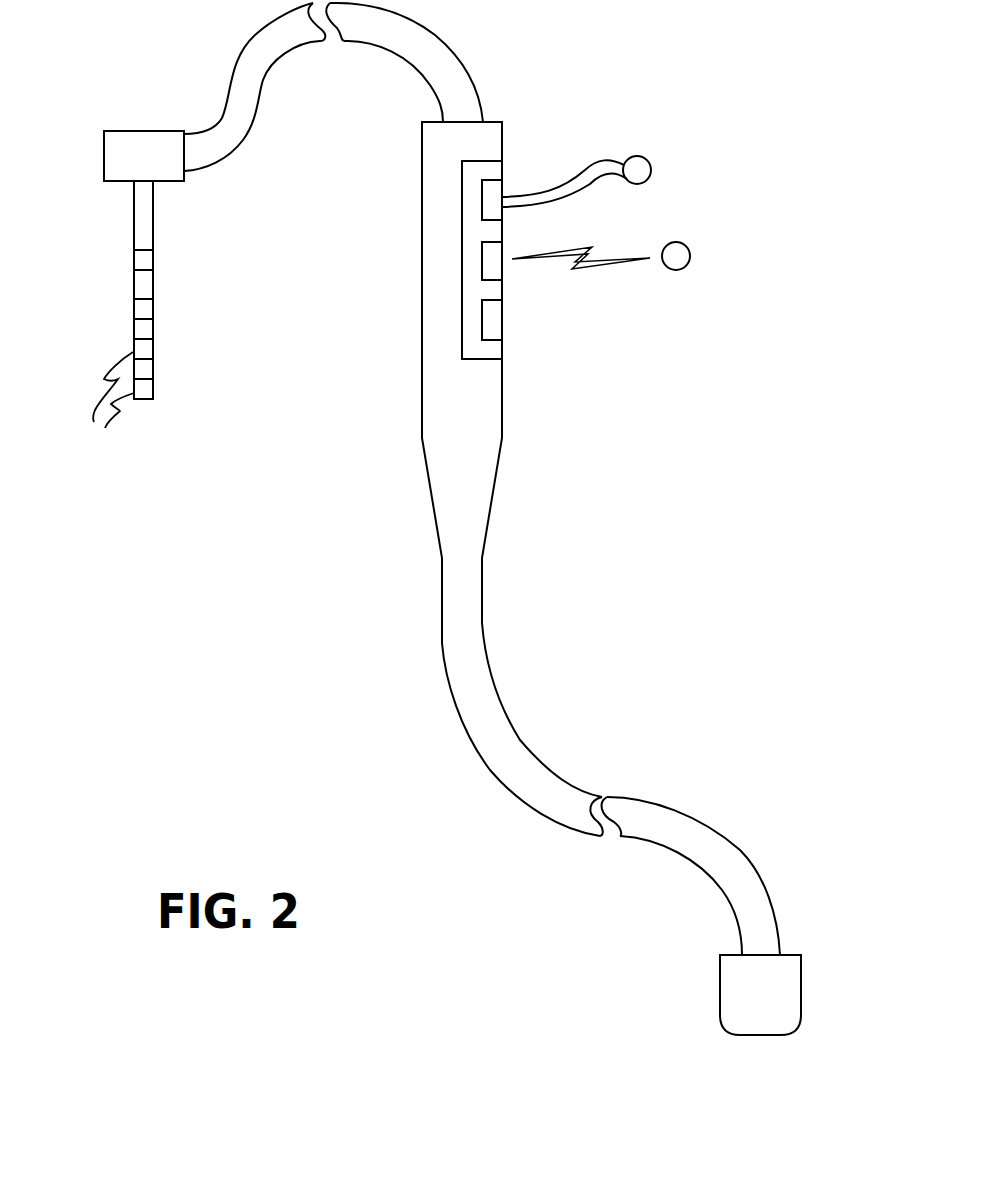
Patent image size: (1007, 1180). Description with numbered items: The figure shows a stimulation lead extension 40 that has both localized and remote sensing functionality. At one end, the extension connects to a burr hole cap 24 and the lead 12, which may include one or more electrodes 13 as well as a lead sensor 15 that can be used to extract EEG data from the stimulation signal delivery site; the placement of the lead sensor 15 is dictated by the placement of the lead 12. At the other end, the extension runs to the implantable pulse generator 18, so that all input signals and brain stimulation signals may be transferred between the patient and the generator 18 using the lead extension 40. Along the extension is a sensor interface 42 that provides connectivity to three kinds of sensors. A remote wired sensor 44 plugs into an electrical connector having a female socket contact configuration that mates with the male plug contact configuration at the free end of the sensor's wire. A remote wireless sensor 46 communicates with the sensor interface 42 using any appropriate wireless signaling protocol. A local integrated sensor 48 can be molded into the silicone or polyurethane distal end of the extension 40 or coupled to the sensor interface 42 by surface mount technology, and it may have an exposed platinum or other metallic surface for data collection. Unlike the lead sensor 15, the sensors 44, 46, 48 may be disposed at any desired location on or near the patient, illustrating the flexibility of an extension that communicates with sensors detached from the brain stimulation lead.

The lead 12 is at (133, 220).
The electrodes 13 is at (133, 310).
The lead sensor 15 is at (153, 261).
The implantable pulse generator 18 is at (802, 993).
The burr hole cap 24 is at (146, 131).
The stimulation lead extension 40 is at (660, 558).
The sensor interface 42 is at (482, 360).
The remote wired sensor 44 is at (651, 170).
The remote wireless sensor 46 is at (690, 256).
The local integrated sensor 48 is at (503, 319).